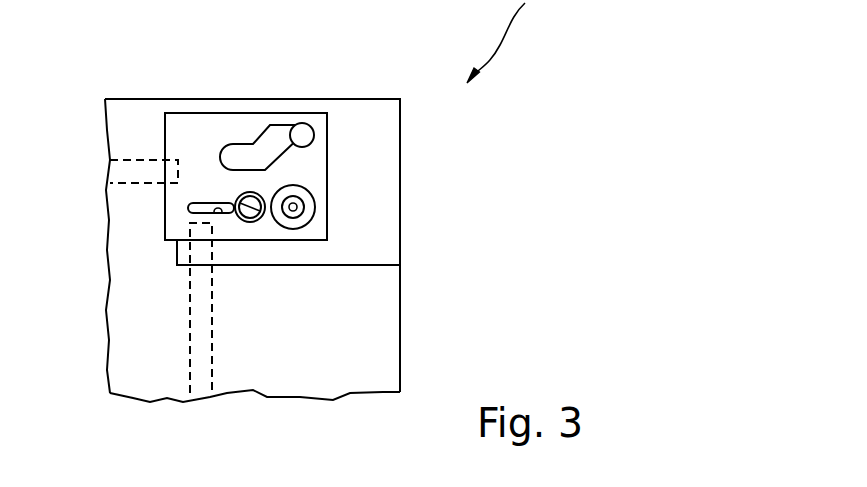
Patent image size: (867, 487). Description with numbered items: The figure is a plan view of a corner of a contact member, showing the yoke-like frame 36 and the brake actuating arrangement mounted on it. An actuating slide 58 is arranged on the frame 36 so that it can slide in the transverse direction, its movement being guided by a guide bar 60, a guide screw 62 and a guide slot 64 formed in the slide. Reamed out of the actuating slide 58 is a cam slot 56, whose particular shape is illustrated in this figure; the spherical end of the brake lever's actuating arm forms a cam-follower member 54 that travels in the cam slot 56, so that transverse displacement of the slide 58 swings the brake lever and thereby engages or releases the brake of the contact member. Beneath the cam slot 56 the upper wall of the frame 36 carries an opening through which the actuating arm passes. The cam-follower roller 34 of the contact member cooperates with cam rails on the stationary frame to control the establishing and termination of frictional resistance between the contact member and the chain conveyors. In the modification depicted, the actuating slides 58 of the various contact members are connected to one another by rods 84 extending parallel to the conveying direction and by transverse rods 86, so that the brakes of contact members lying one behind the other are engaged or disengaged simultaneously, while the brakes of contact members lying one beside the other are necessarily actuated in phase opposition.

The cam-follower roller 34 is at (306, 207).
The yoke-like frame 36 is at (372, 329).
The cam-follower member 54 is at (307, 130).
The cam slot 56 is at (268, 133).
The actuating slide 58 is at (205, 135).
The guide bar 60 is at (380, 252).
The guide screw 62 is at (248, 216).
The guide slot 64 is at (215, 214).
The rod 84 is at (202, 373).
The transverse rod 86 is at (125, 170).